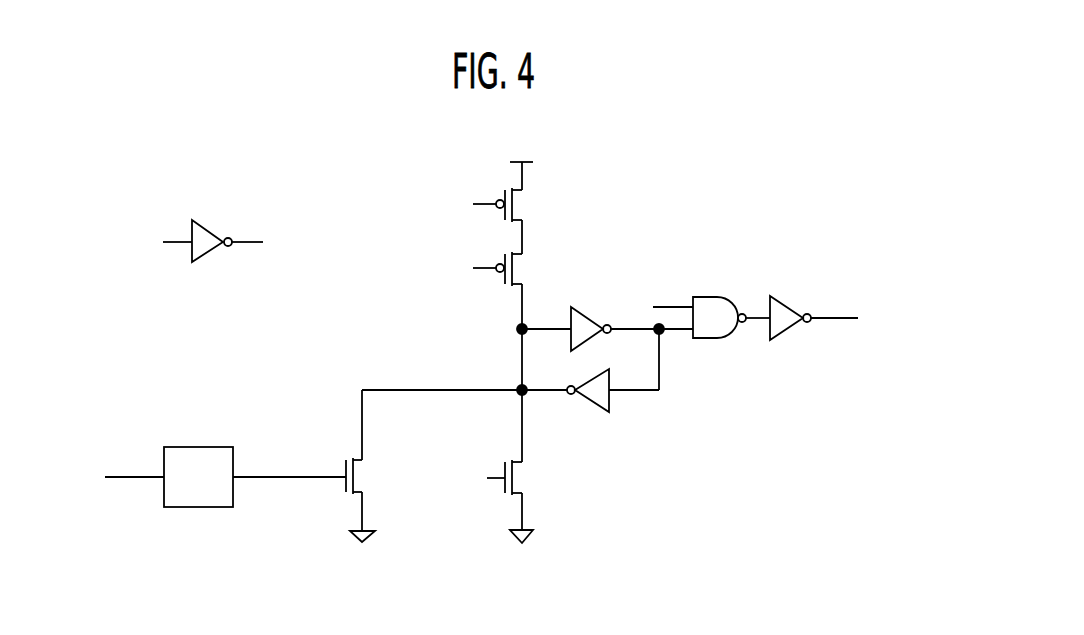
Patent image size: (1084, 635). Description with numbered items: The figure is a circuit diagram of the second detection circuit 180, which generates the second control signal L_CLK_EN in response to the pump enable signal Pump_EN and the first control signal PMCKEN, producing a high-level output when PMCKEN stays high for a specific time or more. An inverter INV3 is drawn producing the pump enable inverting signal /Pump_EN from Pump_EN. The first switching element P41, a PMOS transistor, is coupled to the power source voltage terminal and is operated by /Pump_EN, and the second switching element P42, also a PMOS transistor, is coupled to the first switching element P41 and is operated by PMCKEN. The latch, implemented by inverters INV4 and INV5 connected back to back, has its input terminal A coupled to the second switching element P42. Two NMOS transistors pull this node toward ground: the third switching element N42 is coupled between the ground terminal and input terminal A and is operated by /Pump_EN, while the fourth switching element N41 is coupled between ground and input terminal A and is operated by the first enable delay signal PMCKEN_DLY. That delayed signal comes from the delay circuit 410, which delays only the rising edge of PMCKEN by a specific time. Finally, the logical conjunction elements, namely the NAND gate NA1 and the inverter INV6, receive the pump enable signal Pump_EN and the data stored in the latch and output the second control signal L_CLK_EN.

The second detection circuit 180 is at (527, 613).
The delay circuit 410 is at (190, 447).
The inverter INV3 is at (213, 250).
The inverter INV4 is at (591, 321).
The inverter INV5 is at (588, 400).
The inverter INV6 is at (790, 310).
The NAND gate NA1 is at (699, 317).
The first switching element P41 is at (507, 205).
The second switching element P42 is at (507, 269).
The fourth switching element N41 is at (364, 476).
The third switching element N42 is at (515, 477).